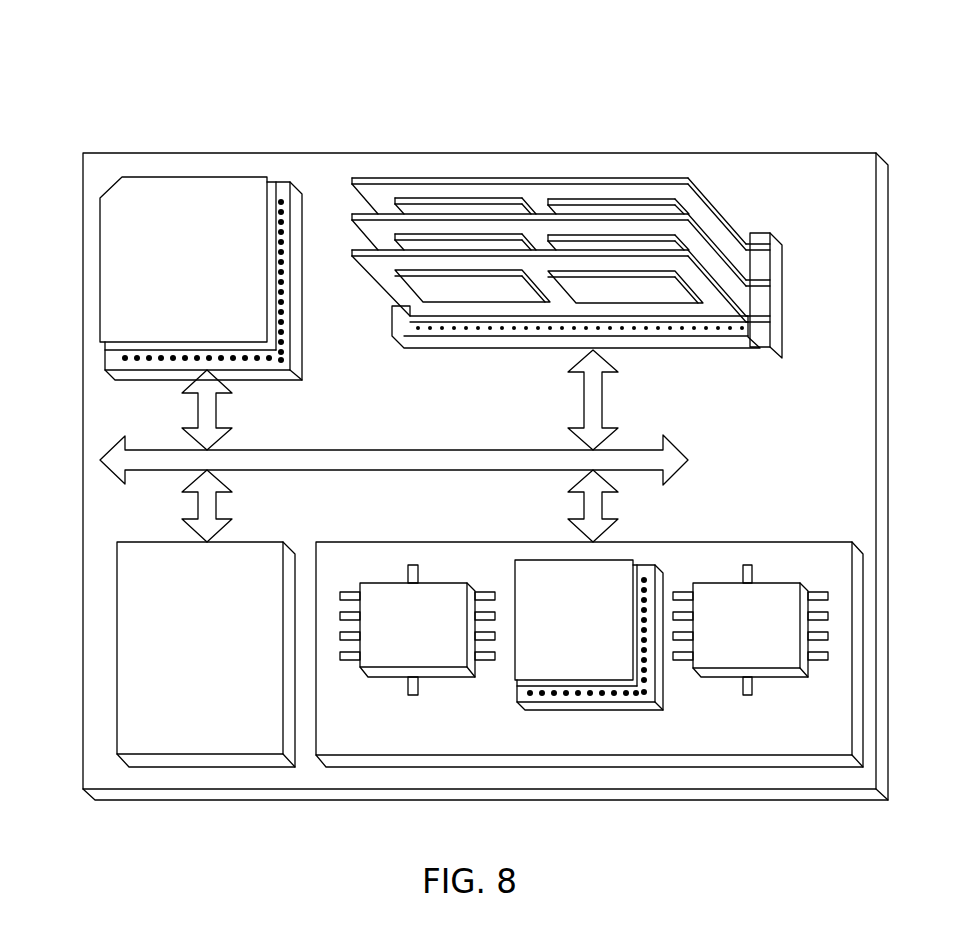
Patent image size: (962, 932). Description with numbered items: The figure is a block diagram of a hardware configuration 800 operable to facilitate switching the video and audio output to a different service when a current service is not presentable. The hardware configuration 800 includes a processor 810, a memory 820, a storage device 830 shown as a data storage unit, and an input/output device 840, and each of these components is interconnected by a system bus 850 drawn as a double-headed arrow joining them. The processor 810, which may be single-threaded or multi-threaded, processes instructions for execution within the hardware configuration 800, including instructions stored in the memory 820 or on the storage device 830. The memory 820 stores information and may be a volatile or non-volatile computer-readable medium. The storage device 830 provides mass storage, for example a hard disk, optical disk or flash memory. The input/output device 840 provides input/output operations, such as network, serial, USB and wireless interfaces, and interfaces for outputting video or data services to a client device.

The hardware configuration 800 is at (152, 45).
The processor 810 is at (100, 267).
The memory 820 is at (725, 218).
The storage device 830 is at (117, 650).
The input/output device 840 is at (478, 542).
The system bus 850 is at (397, 450).